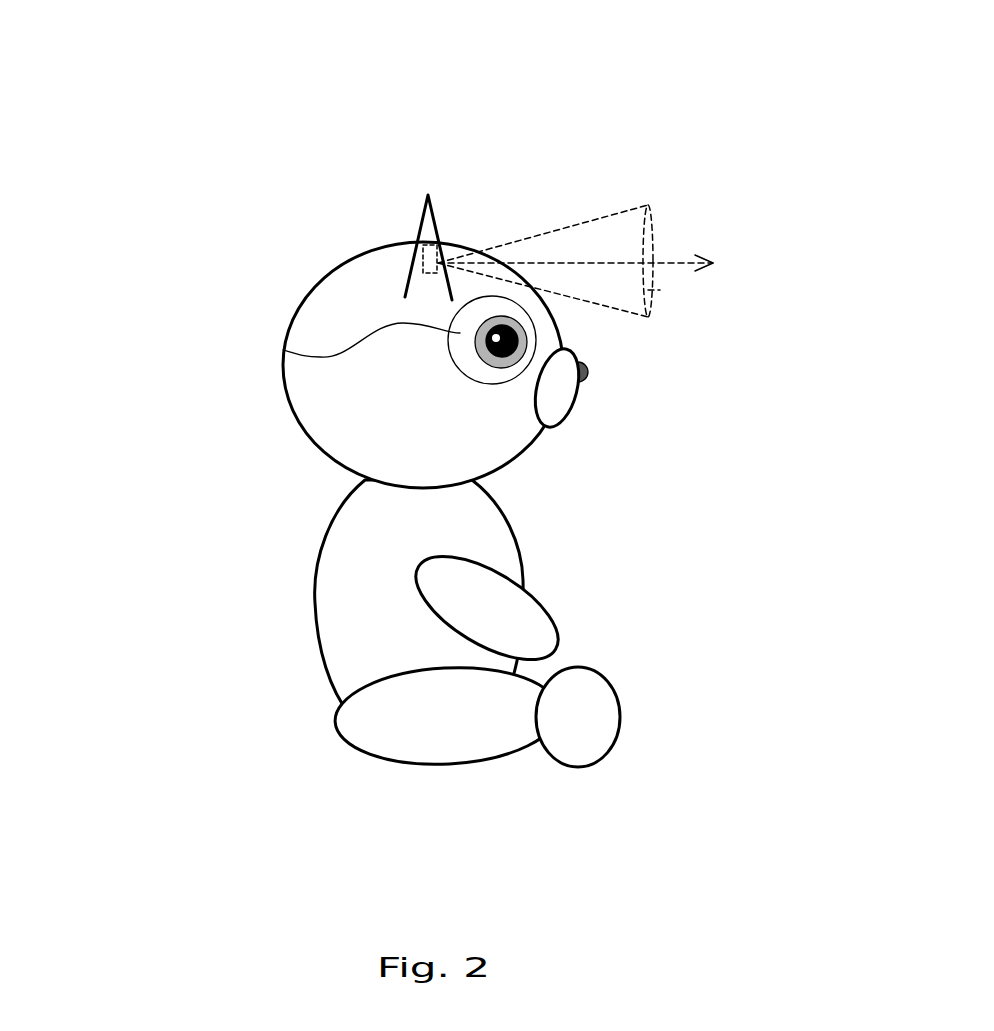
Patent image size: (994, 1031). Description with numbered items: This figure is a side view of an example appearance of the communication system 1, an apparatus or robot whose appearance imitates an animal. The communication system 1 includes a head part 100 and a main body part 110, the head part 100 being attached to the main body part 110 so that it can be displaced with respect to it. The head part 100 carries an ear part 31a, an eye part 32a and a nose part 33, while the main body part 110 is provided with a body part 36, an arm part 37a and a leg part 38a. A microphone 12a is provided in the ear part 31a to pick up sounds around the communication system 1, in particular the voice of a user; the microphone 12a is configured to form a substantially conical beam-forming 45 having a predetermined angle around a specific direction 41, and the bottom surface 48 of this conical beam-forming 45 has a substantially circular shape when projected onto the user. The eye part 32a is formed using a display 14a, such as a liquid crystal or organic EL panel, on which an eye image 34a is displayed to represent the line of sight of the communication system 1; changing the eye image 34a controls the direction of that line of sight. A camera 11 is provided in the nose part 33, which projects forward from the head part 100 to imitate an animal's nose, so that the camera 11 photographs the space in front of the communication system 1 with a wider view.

The communication system 1 is at (434, 428).
The head part 100 is at (407, 324).
The main body part 110 is at (396, 664).
The ear part 31a is at (425, 212).
The microphone 12a is at (460, 243).
The beam-forming 45 is at (595, 212).
The specific direction 41 is at (675, 261).
The bottom surface 48 is at (650, 287).
The eye part 32a is at (283, 350).
The display 14a is at (290, 337).
The eye image 34a is at (523, 337).
The nose part 33 is at (587, 375).
The camera 11 is at (627, 405).
The body part 36 is at (325, 647).
The arm part 37a is at (533, 632).
The leg part 38a is at (502, 752).